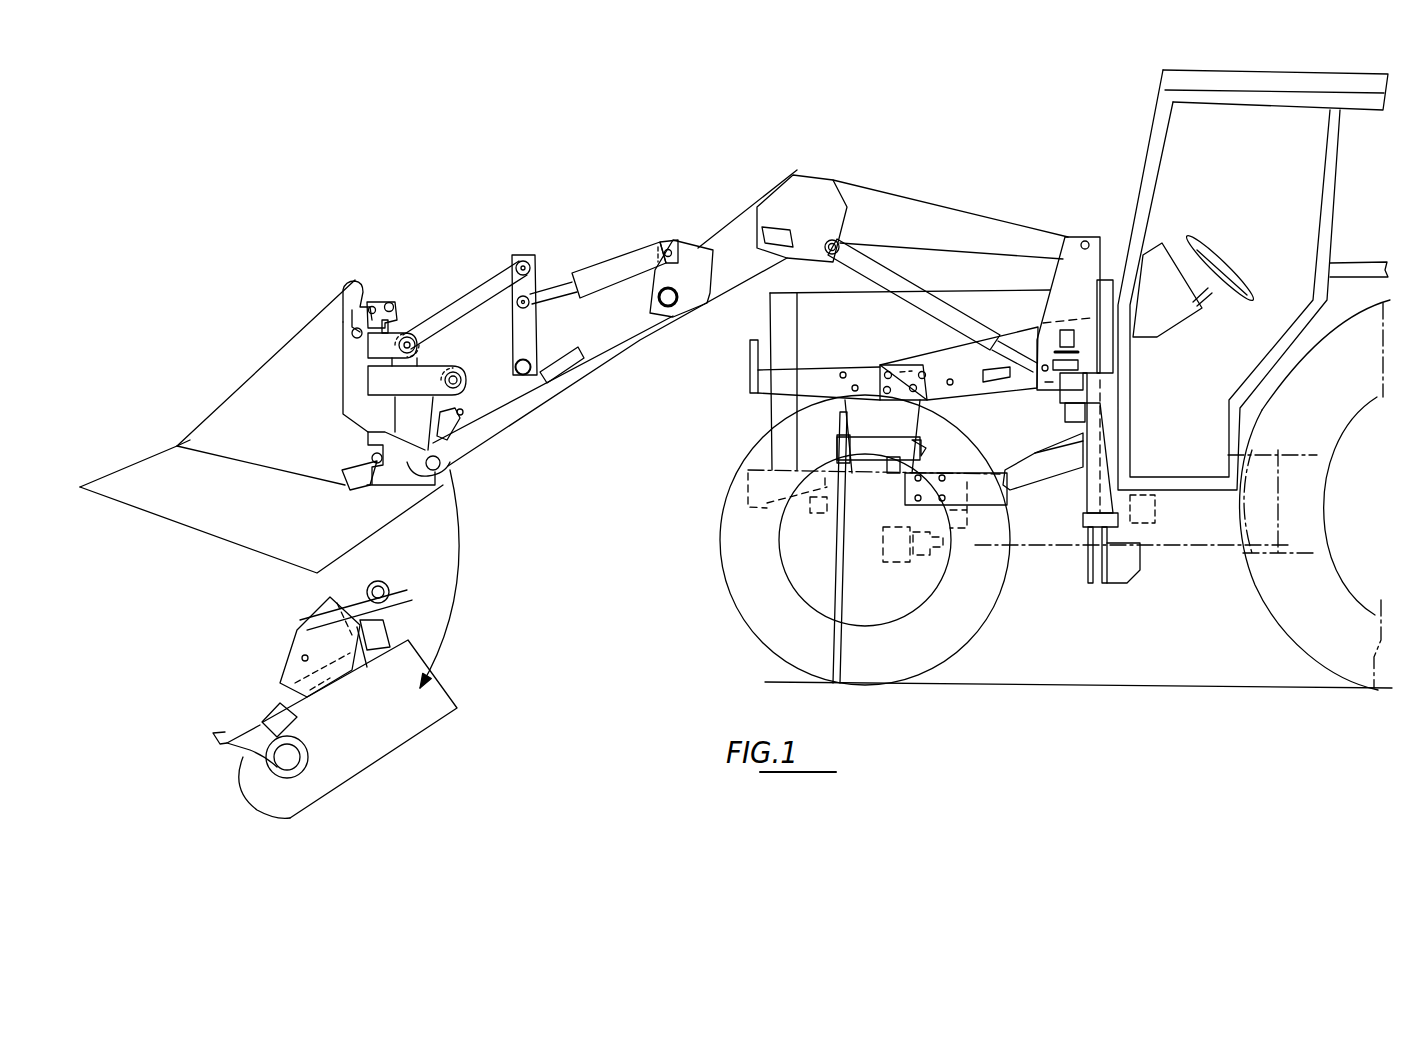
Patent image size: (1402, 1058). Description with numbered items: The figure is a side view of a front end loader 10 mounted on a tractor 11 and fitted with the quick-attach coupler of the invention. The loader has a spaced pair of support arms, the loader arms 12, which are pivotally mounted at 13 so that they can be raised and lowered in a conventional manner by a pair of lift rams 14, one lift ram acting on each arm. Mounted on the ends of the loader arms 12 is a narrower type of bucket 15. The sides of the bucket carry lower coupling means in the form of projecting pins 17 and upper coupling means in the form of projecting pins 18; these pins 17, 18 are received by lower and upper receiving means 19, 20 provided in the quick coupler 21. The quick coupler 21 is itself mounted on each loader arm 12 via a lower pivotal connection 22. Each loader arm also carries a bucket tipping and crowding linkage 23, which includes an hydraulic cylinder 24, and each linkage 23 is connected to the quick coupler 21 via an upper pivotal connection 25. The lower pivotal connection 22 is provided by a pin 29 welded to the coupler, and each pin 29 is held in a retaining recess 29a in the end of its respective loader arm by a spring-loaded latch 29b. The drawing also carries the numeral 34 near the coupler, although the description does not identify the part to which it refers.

The front end loader 10 is at (813, 212).
The tractor 11 is at (1150, 173).
The loader arm 12 is at (738, 230).
The pivotal mounting 13 is at (1086, 242).
The lift ram 14 is at (907, 281).
The bucket 15 is at (285, 397).
The projecting pin 17 is at (372, 455).
The projecting pin 18 is at (350, 337).
The lower receiving means 19 is at (198, 439).
The upper receiving means 20 is at (353, 331).
The quick coupler 21 is at (362, 388).
The lower pivotal connection 22 is at (448, 464).
The bucket tipping and crowding linkage 23 is at (504, 277).
The hydraulic cylinder 24 is at (612, 262).
The upper pivotal connection 25 is at (409, 333).
The pin 29 is at (263, 743).
The retaining recess 29a is at (257, 810).
The spring-loaded latch 29b is at (270, 717).
The latch 34 is at (380, 305).